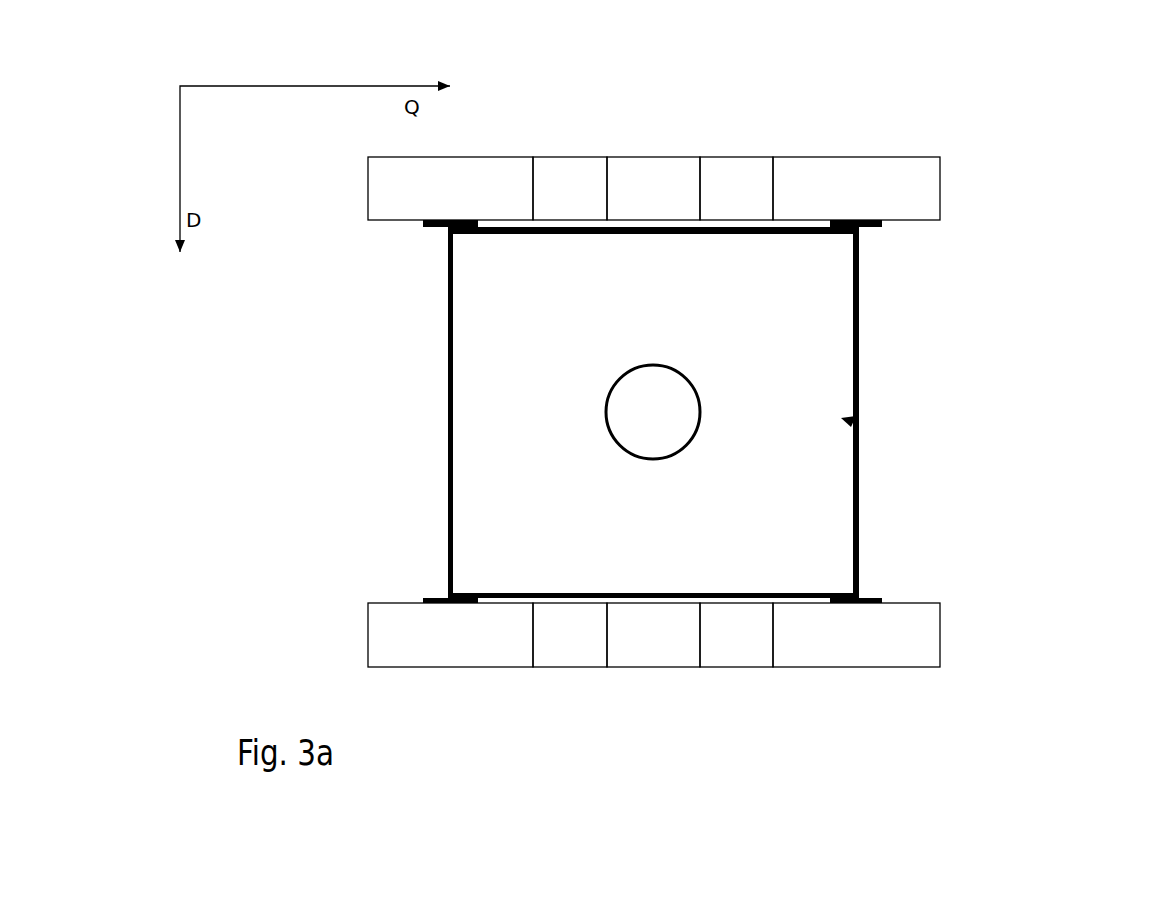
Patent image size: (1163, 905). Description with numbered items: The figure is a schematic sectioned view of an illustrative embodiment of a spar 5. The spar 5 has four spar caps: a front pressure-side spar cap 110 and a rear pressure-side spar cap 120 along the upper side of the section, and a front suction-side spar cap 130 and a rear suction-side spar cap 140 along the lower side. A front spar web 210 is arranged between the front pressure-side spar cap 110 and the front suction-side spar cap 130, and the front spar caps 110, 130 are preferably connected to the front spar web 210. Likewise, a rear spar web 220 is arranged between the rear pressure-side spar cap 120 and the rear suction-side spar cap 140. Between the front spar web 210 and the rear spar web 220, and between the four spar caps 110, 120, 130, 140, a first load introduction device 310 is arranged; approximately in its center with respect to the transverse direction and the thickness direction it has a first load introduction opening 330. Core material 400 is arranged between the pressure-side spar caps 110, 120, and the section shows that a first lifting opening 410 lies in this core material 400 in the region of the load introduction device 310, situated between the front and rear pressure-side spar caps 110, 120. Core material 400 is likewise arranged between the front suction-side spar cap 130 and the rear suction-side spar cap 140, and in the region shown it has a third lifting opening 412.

The spar 5 is at (1075, 174).
The front pressure-side spar cap 110 is at (422, 195).
The rear pressure-side spar cap 120 is at (925, 185).
The front suction-side spar cap 130 is at (385, 653).
The rear suction-side spar cap 140 is at (930, 628).
The front spar web 210 is at (448, 498).
The rear spar web 220 is at (860, 488).
The first load introduction device 310 is at (845, 420).
The first load introduction opening 330 is at (680, 420).
The core material 400 is at (583, 168).
The first lifting opening 410 is at (657, 176).
The third lifting opening 412 is at (643, 645).